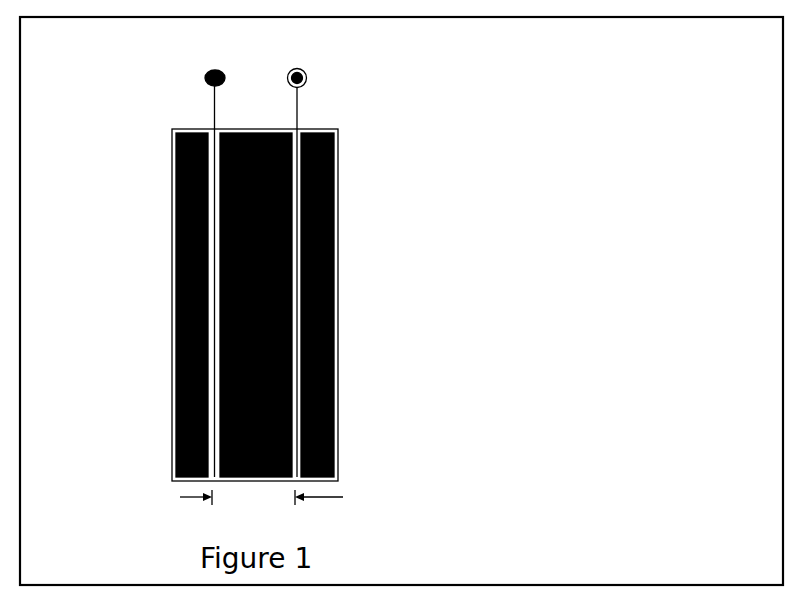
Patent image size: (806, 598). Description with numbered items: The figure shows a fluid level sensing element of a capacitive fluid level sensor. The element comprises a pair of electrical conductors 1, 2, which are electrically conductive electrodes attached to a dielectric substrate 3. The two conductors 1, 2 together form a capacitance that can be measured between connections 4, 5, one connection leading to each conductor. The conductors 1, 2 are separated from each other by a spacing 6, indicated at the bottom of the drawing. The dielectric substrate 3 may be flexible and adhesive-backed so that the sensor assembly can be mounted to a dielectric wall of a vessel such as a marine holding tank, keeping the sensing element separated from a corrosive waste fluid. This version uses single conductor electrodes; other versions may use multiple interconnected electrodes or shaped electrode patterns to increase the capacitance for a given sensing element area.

The electrical conductor 1 is at (198, 154).
The electrical conductor 2 is at (315, 159).
The dielectric substrate 3 is at (340, 228).
The connection 4 is at (230, 64).
The connection 5 is at (312, 70).
The spacing 6 is at (272, 498).